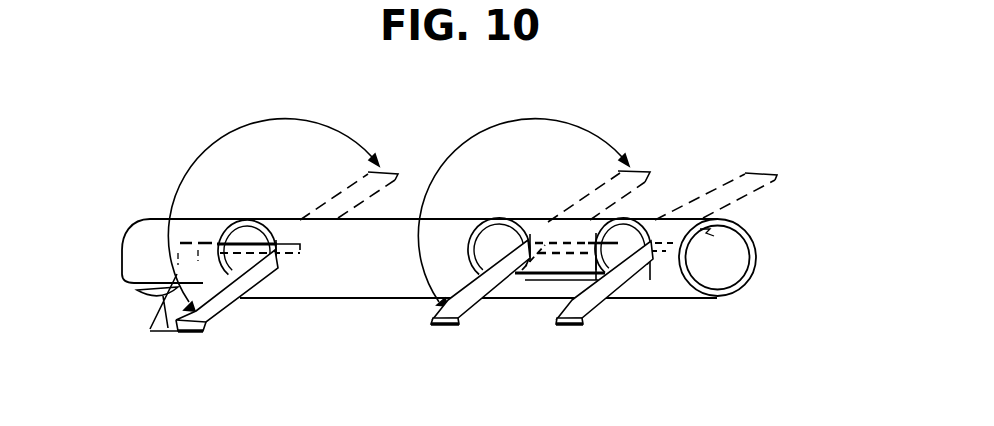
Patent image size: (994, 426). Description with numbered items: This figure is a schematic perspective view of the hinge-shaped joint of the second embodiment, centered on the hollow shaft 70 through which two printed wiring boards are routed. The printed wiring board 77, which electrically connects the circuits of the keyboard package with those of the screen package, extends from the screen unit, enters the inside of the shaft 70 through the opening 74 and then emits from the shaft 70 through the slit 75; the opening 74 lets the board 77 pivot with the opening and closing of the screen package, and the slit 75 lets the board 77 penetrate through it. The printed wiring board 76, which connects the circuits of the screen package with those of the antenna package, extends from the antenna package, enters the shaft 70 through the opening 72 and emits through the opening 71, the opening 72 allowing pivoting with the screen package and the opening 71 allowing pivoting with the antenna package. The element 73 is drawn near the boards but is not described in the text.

The shaft 70 is at (756, 265).
The opening 71 is at (640, 212).
The opening 72 is at (502, 220).
The plate 73 is at (533, 298).
The opening 74 is at (257, 219).
The slit 75 is at (140, 290).
The printed wiring board 76 is at (469, 322).
The printed wiring board 77 is at (231, 300).